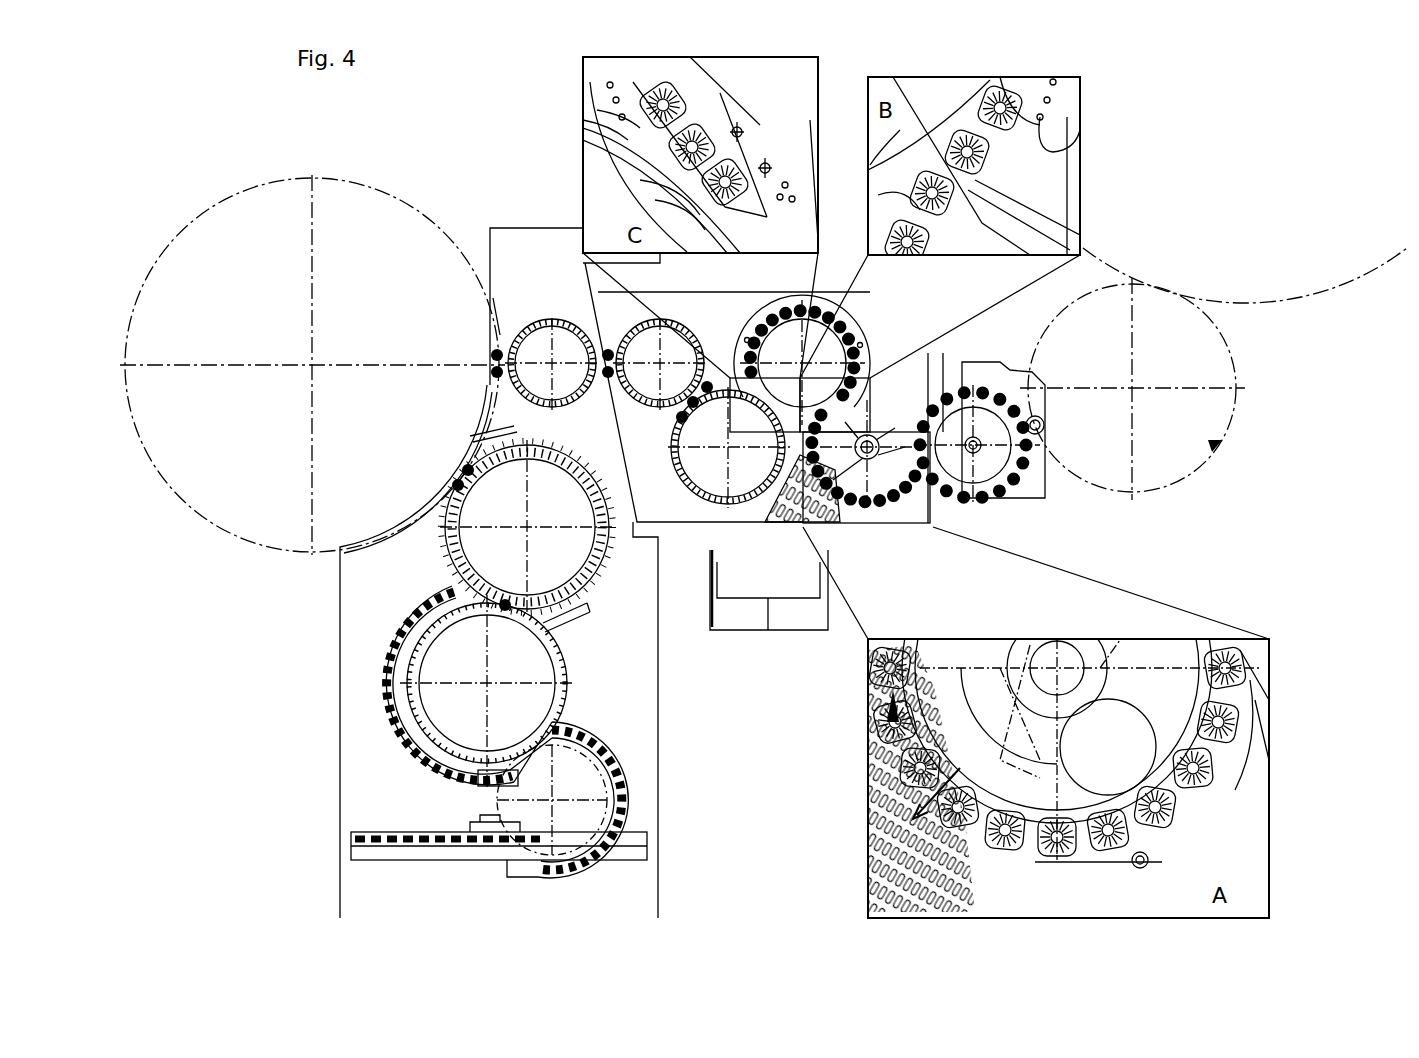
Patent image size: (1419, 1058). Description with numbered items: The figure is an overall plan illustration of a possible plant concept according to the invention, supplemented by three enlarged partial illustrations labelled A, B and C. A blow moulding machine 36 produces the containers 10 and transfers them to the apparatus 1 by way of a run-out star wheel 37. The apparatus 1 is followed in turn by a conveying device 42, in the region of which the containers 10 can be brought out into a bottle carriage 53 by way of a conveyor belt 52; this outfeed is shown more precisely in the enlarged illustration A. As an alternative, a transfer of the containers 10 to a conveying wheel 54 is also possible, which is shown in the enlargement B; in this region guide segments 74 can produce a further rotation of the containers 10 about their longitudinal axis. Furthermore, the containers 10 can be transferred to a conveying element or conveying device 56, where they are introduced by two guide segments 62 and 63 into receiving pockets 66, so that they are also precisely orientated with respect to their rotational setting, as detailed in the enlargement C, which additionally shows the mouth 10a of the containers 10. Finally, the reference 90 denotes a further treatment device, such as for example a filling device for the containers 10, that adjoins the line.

The apparatus 1 is at (985, 470).
The containers 10 is at (672, 93).
The mouth of the containers 10a is at (686, 102).
The blow moulding machine 36 is at (1250, 267).
The run-out star wheel 37 is at (1152, 403).
The conveying device 42 is at (880, 417).
The conveyor belt 52 is at (835, 521).
The bottle carriage 53 is at (797, 597).
The conveying wheel 54 is at (820, 310).
The conveying device 56 is at (740, 293).
The guide segment 62 is at (672, 190).
The guide segment 63 is at (752, 132).
The receiving pockets 66 is at (632, 140).
The guide segments 74 is at (1017, 175).
The further treatment device 90 is at (450, 226).